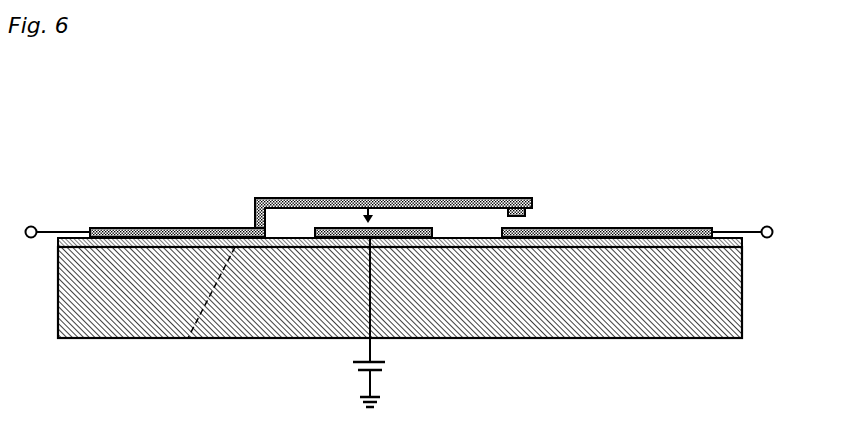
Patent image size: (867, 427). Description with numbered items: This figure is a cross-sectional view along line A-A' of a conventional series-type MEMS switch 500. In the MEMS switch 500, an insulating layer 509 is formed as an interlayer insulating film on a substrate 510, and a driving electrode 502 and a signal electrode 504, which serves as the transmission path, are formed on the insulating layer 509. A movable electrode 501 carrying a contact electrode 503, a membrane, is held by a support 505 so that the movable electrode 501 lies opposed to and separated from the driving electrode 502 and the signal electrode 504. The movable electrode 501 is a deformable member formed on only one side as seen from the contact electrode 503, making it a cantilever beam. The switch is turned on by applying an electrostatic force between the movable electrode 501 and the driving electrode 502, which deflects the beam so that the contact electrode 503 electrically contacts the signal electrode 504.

The MEMS switch 500 is at (204, 89).
The movable electrode 501 is at (380, 202).
The driving electrode 502 is at (408, 247).
The contact electrode 503 is at (528, 202).
The signal electrode 504 is at (610, 230).
The support 505 is at (172, 230).
The insulating layer 509 is at (188, 338).
The substrate 510 is at (587, 303).